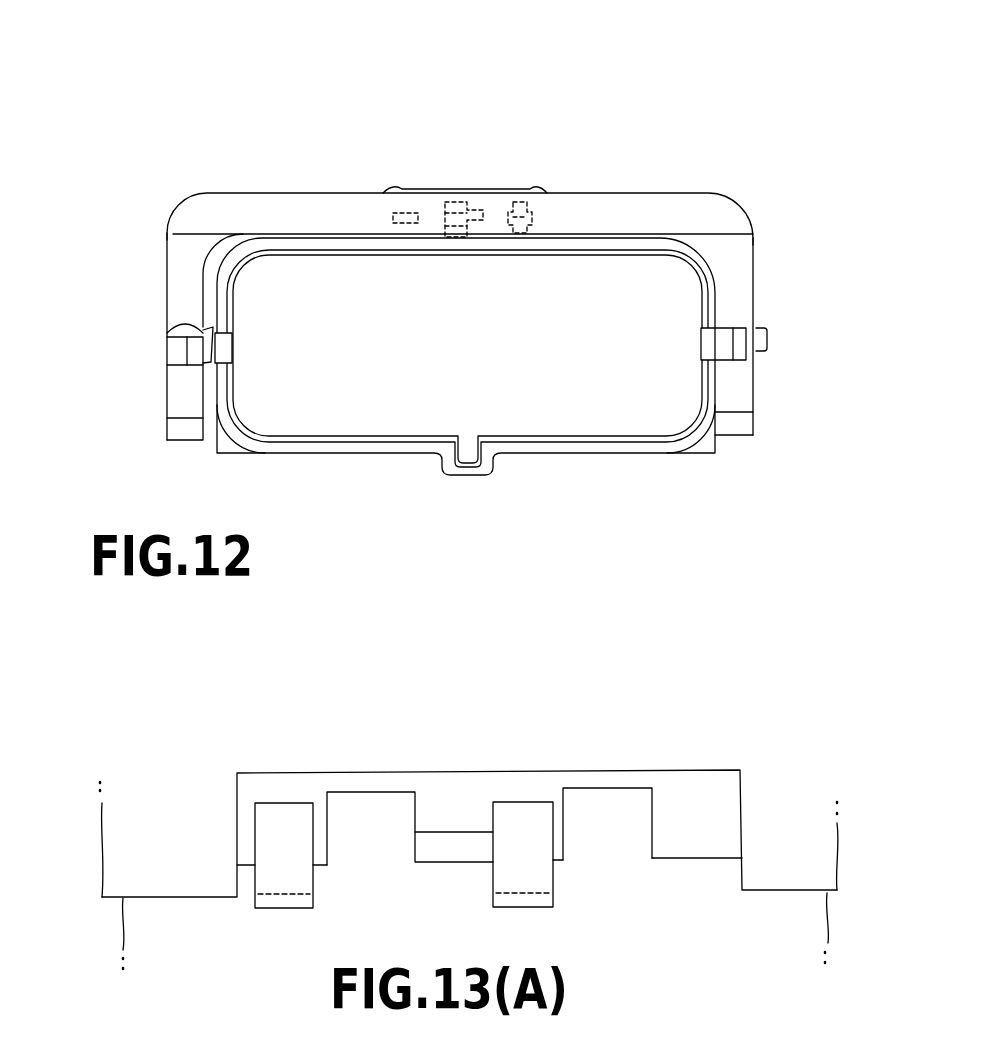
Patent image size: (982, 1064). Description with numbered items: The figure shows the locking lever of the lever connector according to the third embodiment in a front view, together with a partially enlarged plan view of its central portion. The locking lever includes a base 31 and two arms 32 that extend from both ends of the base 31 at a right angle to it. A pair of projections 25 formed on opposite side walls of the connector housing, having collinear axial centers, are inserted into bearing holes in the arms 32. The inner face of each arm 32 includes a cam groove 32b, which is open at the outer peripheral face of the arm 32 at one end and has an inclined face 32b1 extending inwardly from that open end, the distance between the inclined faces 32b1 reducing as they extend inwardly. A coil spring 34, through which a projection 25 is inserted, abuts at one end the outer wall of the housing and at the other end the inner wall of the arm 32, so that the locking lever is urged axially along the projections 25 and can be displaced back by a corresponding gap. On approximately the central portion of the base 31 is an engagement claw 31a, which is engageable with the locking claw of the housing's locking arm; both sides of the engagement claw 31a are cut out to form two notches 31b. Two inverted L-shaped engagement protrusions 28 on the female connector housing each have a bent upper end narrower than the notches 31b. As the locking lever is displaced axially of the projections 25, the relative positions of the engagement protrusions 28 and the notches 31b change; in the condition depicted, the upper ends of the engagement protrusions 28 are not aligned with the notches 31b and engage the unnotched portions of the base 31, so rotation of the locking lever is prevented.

In FIG. 12, the projection 25 is at (762, 328).
In FIG. 12, the engagement protrusion 28 is at (448, 233).
In FIG. 13A, the engagement protrusion 28 is at (307, 870).
In FIG. 12, the base 31 is at (633, 200).
In FIG. 13A, the base 31 is at (777, 875).
In FIG. 13A, the engagement claw 31a is at (448, 853).
In FIG. 12, the notch 31b is at (420, 200).
In FIG. 13A, the notch 31b is at (357, 793).
In FIG. 12, the arm 32 is at (177, 272).
In FIG. 12, the cam groove 32b is at (198, 354).
In FIG. 12, the inclined face 32b1 is at (174, 347).
In FIG. 12, the coil spring 34 is at (167, 333).